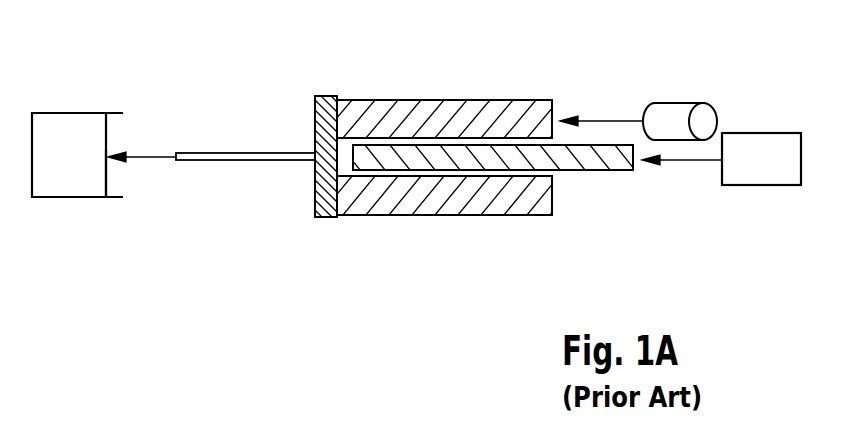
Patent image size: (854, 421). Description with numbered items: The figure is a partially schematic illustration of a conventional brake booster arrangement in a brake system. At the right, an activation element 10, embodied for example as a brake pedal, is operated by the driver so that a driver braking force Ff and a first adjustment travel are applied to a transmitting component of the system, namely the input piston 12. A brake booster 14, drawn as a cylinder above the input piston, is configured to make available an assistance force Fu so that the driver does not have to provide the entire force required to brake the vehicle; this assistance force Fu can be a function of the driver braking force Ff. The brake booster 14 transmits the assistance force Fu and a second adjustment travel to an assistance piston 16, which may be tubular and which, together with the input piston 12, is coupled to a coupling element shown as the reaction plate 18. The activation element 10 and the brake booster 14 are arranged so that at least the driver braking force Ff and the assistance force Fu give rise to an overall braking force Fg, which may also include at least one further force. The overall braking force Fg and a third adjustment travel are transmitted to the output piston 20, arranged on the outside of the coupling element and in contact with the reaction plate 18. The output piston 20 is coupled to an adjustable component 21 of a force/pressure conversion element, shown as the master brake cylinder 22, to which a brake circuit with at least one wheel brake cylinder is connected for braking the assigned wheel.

The activation element 10 is at (757, 185).
The input piston 12 is at (626, 166).
The brake booster 14 is at (674, 108).
The assistance piston 16 is at (533, 127).
The reaction plate 18 is at (320, 217).
The output piston 20 is at (237, 161).
The adjustable component 21 is at (108, 177).
The master brake cylinder 22 is at (63, 198).
The overall braking force Fg is at (147, 156).
The assistance force Fu is at (597, 121).
The driver braking force Ff is at (688, 160).